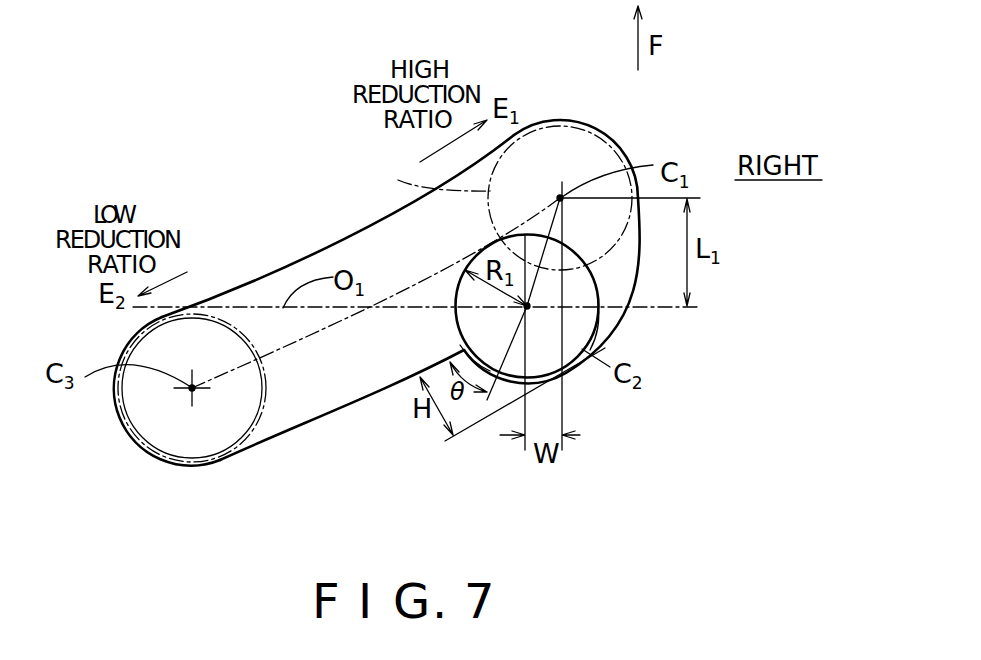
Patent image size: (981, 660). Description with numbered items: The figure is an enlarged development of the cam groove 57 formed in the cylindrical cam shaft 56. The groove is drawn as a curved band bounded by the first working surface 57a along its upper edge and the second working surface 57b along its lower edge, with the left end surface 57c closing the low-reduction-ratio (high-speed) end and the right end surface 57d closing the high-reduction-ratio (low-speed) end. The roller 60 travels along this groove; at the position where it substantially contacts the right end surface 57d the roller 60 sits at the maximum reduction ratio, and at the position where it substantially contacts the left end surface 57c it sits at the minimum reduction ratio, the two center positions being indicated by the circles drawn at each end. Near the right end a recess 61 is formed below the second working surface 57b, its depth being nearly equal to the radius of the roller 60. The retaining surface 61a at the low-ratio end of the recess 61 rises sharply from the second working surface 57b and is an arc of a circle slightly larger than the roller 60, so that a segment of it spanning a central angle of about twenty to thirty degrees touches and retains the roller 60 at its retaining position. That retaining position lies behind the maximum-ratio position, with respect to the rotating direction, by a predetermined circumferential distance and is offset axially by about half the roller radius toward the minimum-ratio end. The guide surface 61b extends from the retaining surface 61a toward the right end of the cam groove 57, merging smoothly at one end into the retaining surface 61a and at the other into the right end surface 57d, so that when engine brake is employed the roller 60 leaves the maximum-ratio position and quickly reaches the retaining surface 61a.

The cylindrical cam shaft 56 is at (284, 242).
The cam groove 57 is at (273, 284).
The first working surface 57a is at (405, 208).
The second working surface 57b is at (329, 413).
The left end surface 57c is at (127, 430).
The right end surface 57d is at (610, 138).
The roller 60 is at (398, 180).
The recess 61 is at (577, 390).
The retaining surface 61a is at (483, 372).
The guide surface 61b is at (615, 323).